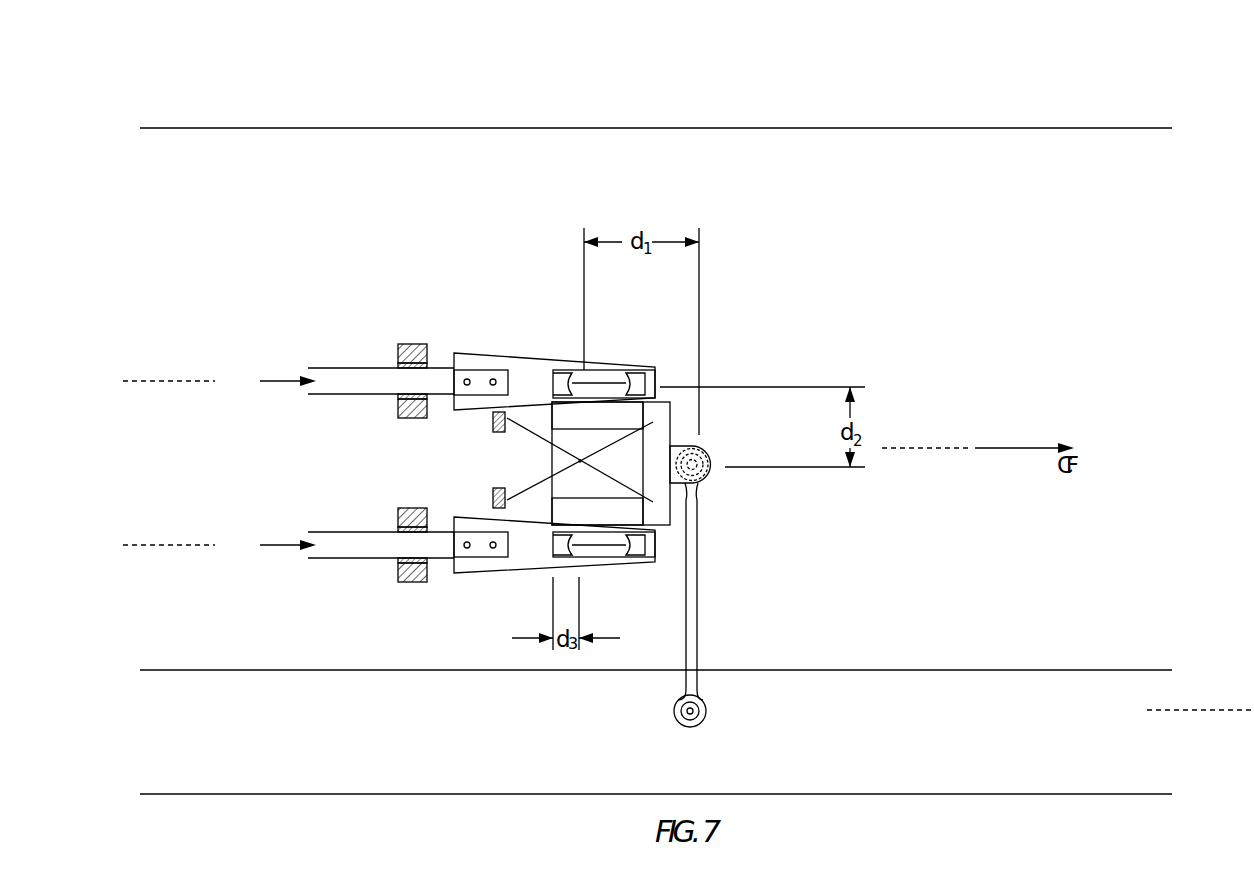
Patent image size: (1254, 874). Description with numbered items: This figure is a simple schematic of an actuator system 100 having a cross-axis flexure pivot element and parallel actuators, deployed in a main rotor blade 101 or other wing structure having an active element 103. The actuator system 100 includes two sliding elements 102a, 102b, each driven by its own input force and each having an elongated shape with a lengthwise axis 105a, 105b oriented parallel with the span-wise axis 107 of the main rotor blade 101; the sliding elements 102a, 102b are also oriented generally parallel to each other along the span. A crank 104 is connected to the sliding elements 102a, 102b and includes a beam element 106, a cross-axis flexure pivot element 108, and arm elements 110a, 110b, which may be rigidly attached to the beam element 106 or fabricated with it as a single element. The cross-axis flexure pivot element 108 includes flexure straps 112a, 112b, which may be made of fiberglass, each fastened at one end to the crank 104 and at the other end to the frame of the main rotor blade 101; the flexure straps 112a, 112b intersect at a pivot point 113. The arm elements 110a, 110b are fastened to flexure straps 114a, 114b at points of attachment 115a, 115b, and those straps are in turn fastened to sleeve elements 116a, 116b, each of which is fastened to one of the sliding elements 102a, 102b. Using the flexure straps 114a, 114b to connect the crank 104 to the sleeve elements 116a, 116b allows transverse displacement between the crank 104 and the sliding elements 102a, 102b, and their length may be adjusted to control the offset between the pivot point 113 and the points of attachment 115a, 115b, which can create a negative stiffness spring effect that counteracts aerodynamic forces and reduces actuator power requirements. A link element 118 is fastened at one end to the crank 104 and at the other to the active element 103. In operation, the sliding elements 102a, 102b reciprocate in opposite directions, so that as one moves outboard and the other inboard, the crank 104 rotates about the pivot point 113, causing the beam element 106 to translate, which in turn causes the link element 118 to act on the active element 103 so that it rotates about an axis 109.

The actuator system 100 is at (265, 232).
The main rotor blade 101 is at (407, 72).
The sliding element 102a is at (345, 542).
The sliding element 102b is at (352, 388).
The active element 103 is at (505, 778).
The crank 104 is at (552, 517).
The lengthwise axis 105a is at (143, 545).
The lengthwise axis 105b is at (143, 381).
The beam element 106 is at (660, 428).
The span-wise axis 107 is at (948, 477).
The cross-axis flexure pivot element 108 is at (538, 460).
The axis 109 is at (1200, 733).
The arm element 110a is at (614, 523).
The arm element 110b is at (627, 428).
The flexure strap 112a is at (613, 484).
The flexure strap 112b is at (613, 442).
The pivot point 113 is at (582, 462).
The flexure strap 114a is at (583, 548).
The flexure strap 114b is at (593, 381).
The point of attachment 115a is at (574, 574).
The point of attachment 115b is at (595, 350).
The sleeve element 116a is at (495, 574).
The sleeve element 116b is at (520, 358).
The link element 118 is at (698, 565).